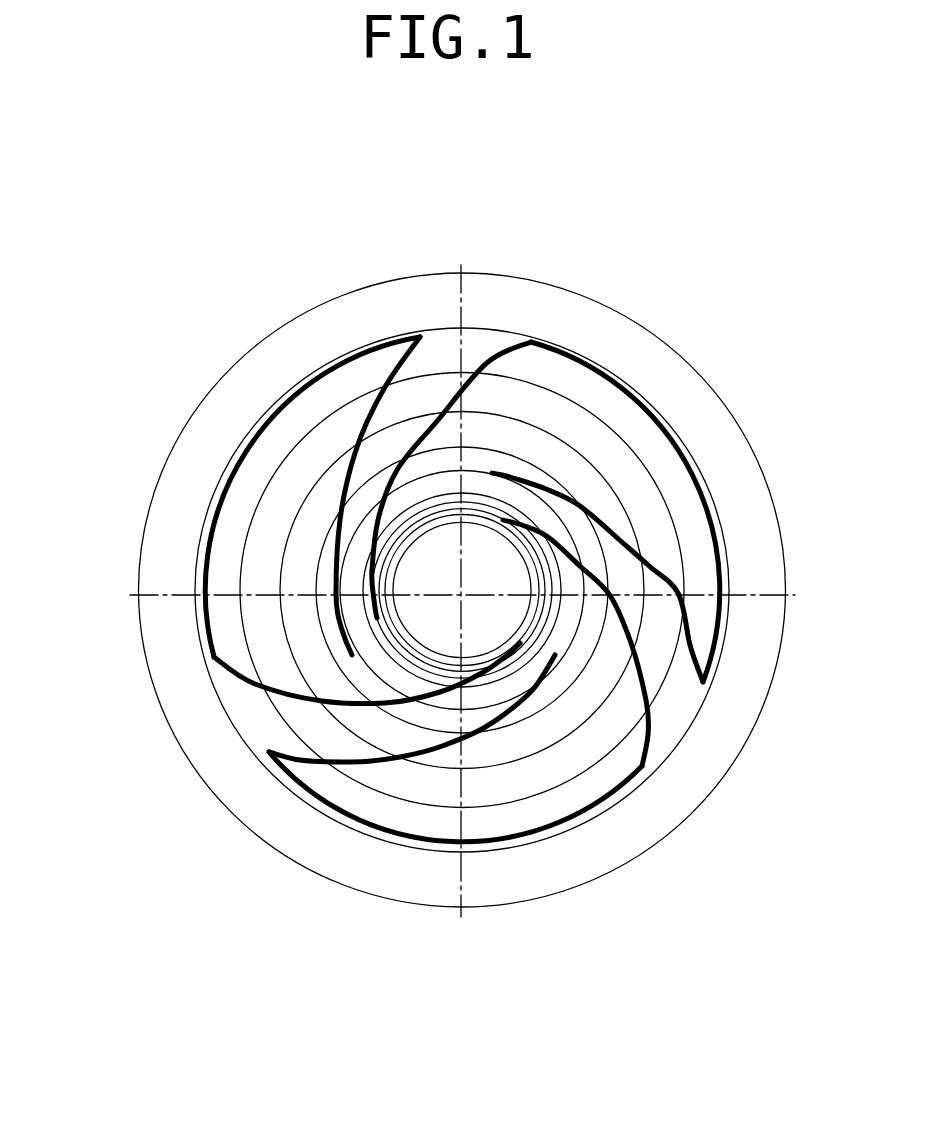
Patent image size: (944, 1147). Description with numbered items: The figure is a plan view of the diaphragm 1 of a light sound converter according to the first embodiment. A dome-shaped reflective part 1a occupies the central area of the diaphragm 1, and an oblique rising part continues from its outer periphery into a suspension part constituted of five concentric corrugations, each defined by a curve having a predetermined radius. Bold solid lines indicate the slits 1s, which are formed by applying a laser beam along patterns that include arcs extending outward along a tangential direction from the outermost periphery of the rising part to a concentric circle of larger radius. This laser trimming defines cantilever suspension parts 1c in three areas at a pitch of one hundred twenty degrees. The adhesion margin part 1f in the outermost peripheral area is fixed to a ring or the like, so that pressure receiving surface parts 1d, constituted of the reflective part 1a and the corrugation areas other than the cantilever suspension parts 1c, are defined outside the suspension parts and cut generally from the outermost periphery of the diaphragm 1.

The diaphragm 1 is at (172, 427).
The reflective part 1a is at (432, 563).
The cantilever suspension part 1c is at (413, 400).
The pressure receiving surface part 1d is at (561, 440).
The adhesion margin part 1f is at (725, 453).
The slit 1s is at (508, 370).